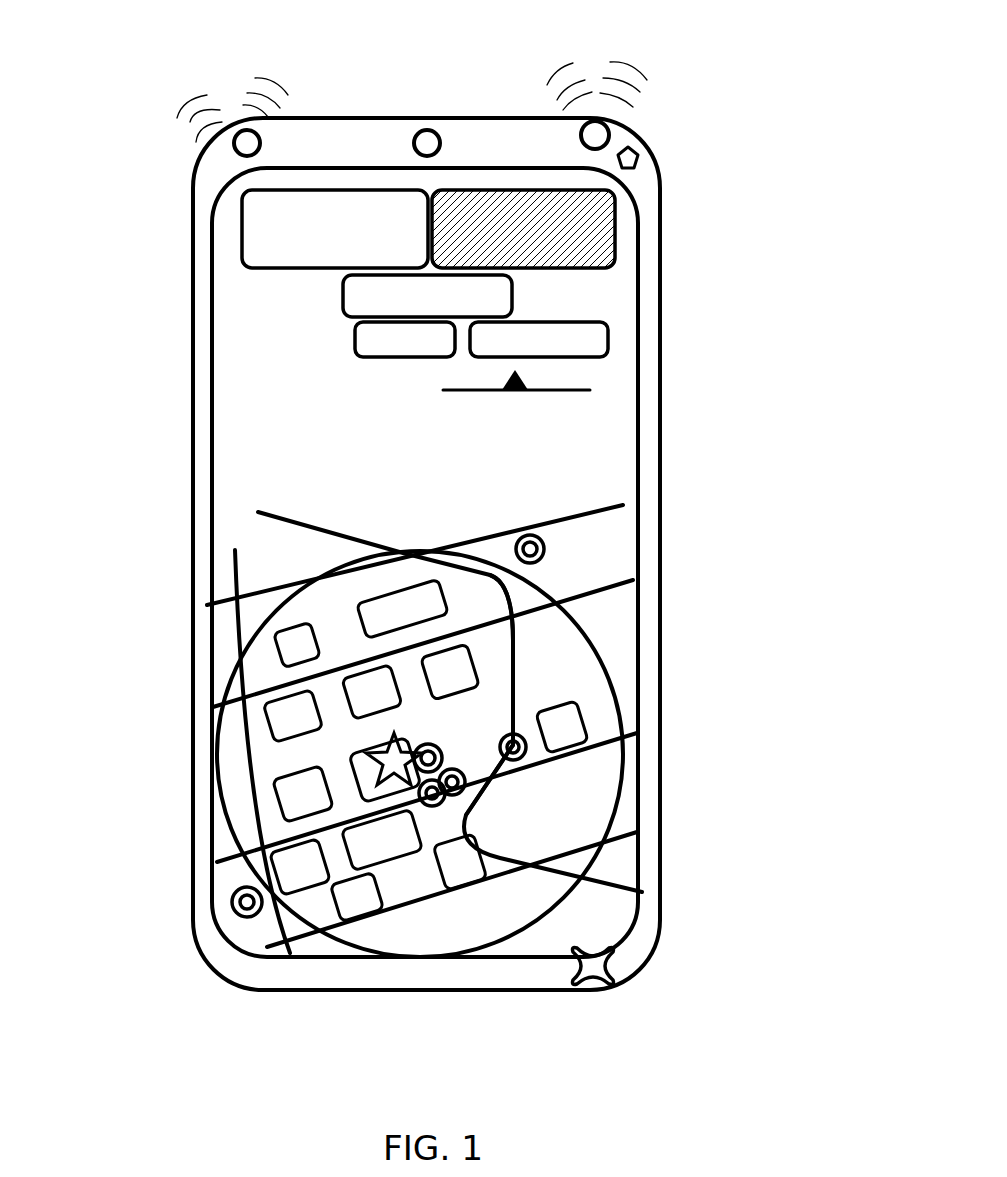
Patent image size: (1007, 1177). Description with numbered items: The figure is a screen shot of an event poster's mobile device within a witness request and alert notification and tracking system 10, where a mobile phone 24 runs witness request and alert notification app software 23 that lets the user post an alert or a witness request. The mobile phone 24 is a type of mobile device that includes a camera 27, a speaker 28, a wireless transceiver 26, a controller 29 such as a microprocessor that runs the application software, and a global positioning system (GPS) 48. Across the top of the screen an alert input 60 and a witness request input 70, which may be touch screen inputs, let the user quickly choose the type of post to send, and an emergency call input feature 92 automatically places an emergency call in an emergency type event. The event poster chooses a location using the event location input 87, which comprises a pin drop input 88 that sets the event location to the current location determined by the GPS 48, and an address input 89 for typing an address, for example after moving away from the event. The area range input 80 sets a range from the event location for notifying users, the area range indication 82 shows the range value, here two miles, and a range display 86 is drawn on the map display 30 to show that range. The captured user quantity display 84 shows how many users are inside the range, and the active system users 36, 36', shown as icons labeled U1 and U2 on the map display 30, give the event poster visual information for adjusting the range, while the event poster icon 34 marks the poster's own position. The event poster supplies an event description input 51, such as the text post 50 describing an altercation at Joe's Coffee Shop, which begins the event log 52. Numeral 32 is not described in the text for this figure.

The witness request and alert notification and tracking system 10 is at (740, 238).
The witness request and alert notification app software 23 is at (639, 160).
The mobile phone 24 is at (216, 176).
The wireless transceiver 26 is at (593, 133).
The camera 27 is at (427, 143).
The speaker 28 is at (247, 140).
The controller 29 is at (638, 150).
The map display 30 is at (630, 520).
The end user location marker 32 is at (360, 752).
The event poster icon 34 is at (487, 783).
The active system user 36 is at (489, 707).
The active system user 36' is at (613, 660).
The global positioning system (GPS) 48 is at (613, 968).
The text post 50 is at (241, 453).
The event description input 51 is at (247, 482).
The event log 52 is at (285, 489).
The alert input 60 is at (222, 181).
The witness request input 70 is at (580, 242).
The area range input 80 is at (592, 388).
The area range indication 82 is at (241, 378).
The captured user quantity display 84 is at (241, 415).
The range display 86 is at (583, 637).
The event location input 87 is at (232, 338).
The pin drop input 88 is at (357, 338).
The address input 89 is at (597, 338).
The 911 call input feature 92 is at (483, 303).